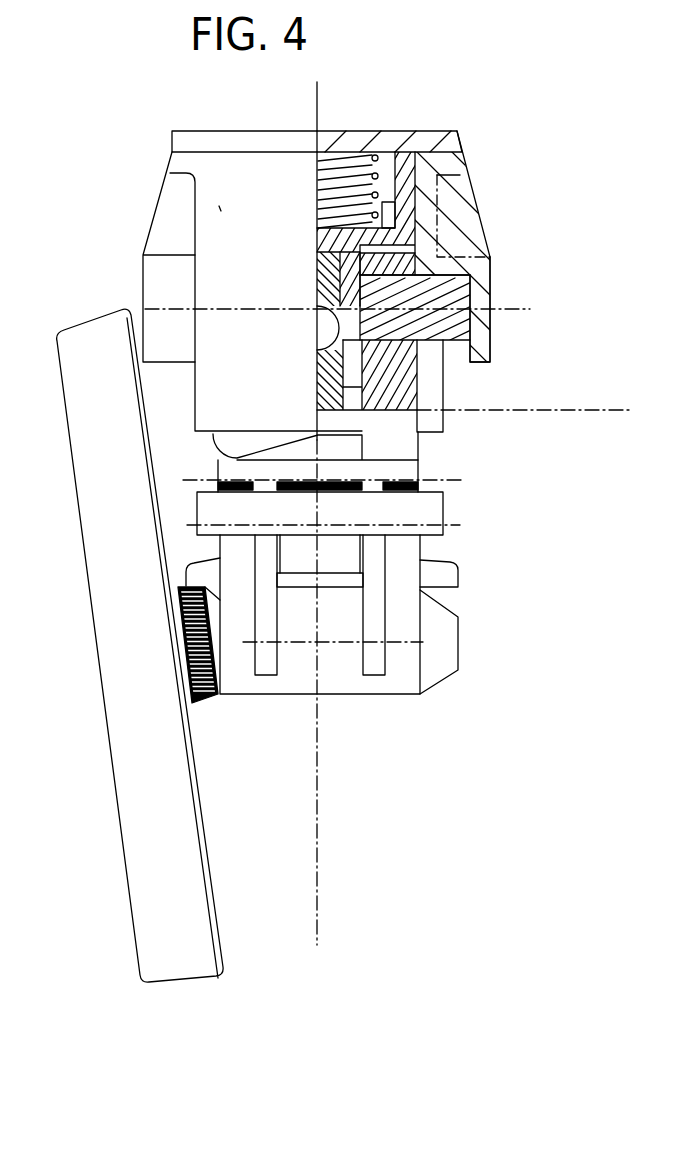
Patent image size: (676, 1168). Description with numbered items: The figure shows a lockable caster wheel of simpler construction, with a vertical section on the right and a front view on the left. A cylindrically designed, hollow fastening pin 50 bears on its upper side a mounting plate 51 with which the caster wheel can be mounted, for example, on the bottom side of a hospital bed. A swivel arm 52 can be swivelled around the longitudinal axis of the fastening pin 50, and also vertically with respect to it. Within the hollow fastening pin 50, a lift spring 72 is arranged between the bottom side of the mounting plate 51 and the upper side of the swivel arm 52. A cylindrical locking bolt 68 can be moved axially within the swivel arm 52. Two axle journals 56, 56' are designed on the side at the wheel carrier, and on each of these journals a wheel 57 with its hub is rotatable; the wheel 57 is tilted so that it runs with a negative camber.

The lift spring 72 is at (353, 157).
The mounting plate 51 is at (400, 133).
The fastening pin 50 is at (407, 188).
The swivel arm 52 is at (485, 340).
The locking bolt 68 is at (322, 375).
The axle journal 56 is at (174, 643).
The axle journal 56' is at (472, 627).
The wheel 57 is at (100, 686).